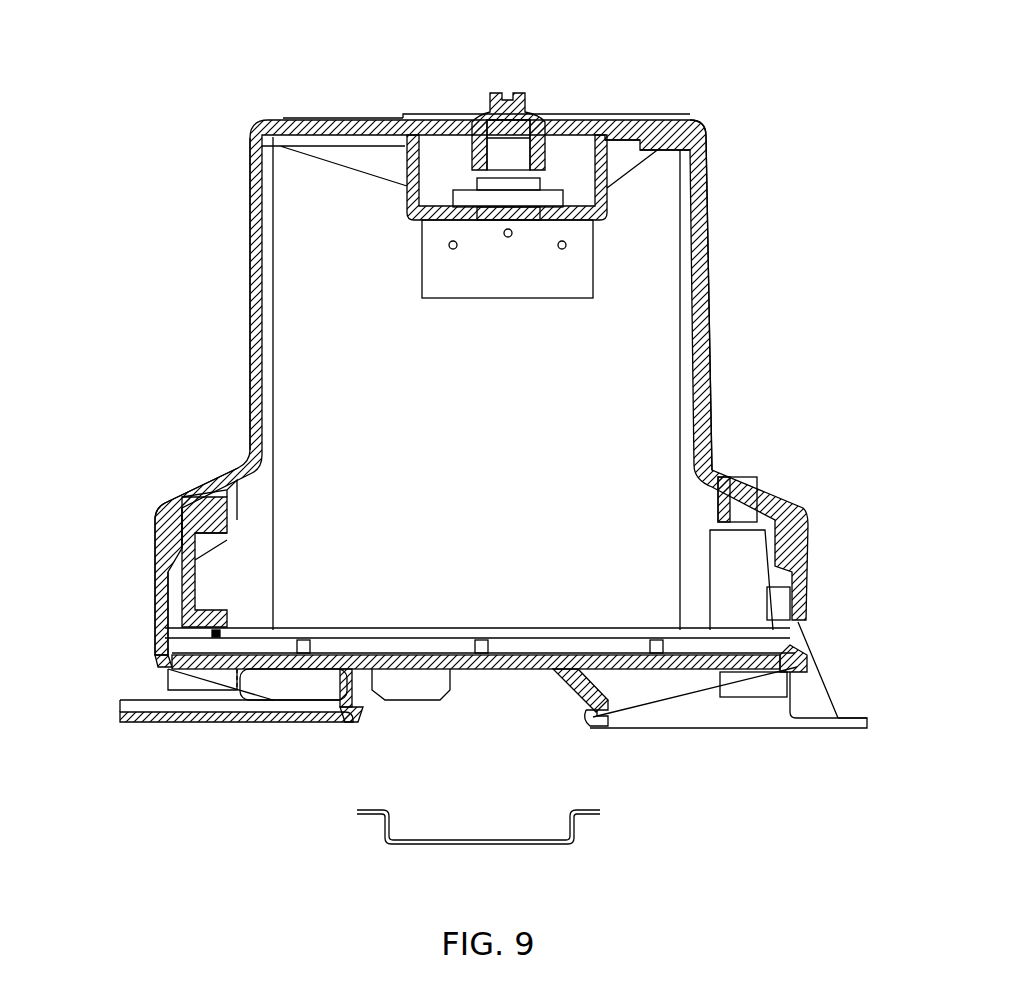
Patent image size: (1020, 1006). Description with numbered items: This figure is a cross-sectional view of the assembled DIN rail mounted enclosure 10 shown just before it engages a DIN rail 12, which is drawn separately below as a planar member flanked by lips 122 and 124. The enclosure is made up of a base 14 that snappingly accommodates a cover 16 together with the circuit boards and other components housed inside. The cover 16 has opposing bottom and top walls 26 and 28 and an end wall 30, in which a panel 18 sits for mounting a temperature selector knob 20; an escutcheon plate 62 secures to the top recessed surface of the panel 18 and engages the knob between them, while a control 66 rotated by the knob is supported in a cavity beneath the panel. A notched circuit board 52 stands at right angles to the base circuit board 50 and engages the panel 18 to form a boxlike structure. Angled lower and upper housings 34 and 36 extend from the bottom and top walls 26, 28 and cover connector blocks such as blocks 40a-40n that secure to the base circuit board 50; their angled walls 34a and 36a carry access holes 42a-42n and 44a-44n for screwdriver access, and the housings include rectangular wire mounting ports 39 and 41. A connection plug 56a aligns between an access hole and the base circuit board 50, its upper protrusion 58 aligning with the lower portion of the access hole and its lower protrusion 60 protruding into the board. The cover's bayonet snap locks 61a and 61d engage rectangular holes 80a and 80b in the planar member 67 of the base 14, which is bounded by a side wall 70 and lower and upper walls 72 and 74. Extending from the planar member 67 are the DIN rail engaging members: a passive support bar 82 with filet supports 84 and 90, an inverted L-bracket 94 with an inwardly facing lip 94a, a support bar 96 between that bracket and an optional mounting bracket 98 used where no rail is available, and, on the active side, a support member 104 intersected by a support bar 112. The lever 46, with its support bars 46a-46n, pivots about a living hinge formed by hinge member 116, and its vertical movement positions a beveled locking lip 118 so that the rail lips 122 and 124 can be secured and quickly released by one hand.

The DIN rail mounted enclosure 10 is at (783, 88).
The DIN rail 12 is at (553, 845).
The base member 14 is at (828, 648).
The cover 16 is at (724, 302).
The panel 18 is at (635, 128).
The temperature selector knob 20 is at (518, 108).
The bottom wall 26 is at (247, 227).
The top wall 28 is at (705, 233).
The end wall 30 is at (688, 124).
The angled lower housing 34 is at (168, 503).
The angled wall 34a is at (160, 515).
The angled upper housing 36 is at (760, 502).
The angled wall 36a is at (777, 520).
The rectangular wire mounting port 39 is at (167, 603).
The connector blocks 40a-40n is at (722, 571).
The rectangular wire mounting port 41 is at (780, 600).
The access holes 42a-42n is at (207, 490).
The access holes 44a-44n is at (737, 490).
The lever 46 is at (207, 715).
The support bars 46a-46n is at (130, 708).
The base circuit board 50 is at (437, 633).
The notched circuit board 52 is at (466, 421).
The connection plug 56a is at (203, 547).
The upper protrusion 58 is at (217, 500).
The lower protrusion 60 is at (222, 634).
The bayonet snap lock 61a is at (190, 683).
The bayonet snap lock 61d is at (772, 695).
The escutcheon plate 62 is at (325, 118).
The control 66 is at (498, 276).
The planar member 67 is at (503, 669).
The side wall 70 is at (342, 642).
The lower wall 72 is at (157, 632).
The upper wall 74 is at (723, 672).
The rectangular hole 80a is at (157, 655).
The rectangular hole 80b is at (792, 665).
The support bar 82 is at (593, 703).
The filet support 84 is at (575, 685).
The filet support 90 is at (672, 682).
The inverted L-bracket 94 is at (607, 707).
The inwardly facing lip 94a is at (588, 727).
The support bar 96 is at (705, 710).
The mounting bracket 98 is at (860, 728).
The support member 104 is at (420, 683).
The support bar 112 is at (283, 688).
The hinge member 116 is at (367, 705).
The beveled locking lip 118 is at (364, 726).
The lip 122 is at (362, 814).
The lip 124 is at (600, 816).